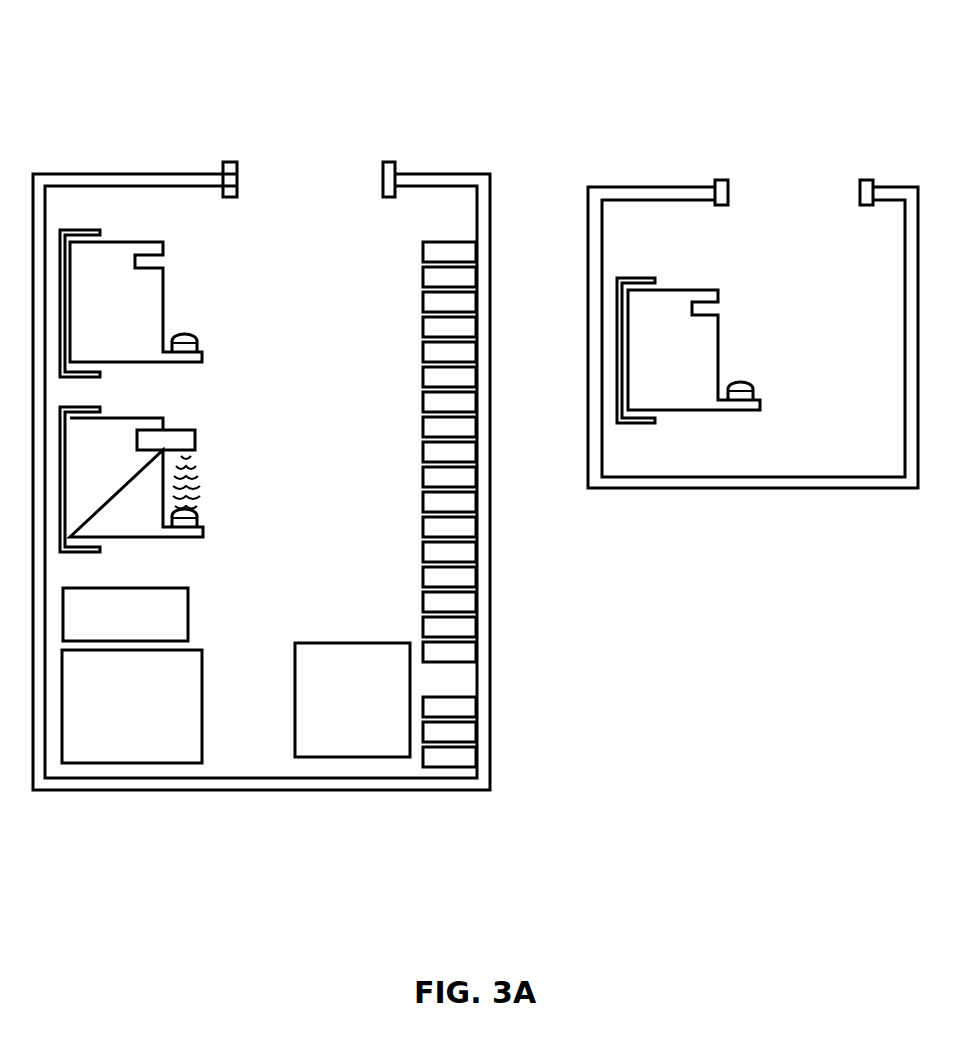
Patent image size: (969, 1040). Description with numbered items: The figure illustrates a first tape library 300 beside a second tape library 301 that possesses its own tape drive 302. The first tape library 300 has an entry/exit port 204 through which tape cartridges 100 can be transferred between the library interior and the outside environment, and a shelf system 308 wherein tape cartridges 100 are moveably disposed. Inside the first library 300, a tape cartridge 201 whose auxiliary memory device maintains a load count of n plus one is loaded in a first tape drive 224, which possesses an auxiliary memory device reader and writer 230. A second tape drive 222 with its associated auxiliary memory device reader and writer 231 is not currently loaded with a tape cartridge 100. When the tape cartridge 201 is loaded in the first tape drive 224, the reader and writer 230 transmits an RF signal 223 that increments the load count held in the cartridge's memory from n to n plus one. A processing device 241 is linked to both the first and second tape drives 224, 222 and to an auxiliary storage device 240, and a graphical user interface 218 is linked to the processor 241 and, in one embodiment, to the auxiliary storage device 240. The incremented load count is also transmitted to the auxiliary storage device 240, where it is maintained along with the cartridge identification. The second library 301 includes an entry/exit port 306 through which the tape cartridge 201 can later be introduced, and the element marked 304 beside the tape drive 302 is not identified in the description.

The first tape library 300 is at (203, 80).
The entry/exit port 204 is at (321, 161).
The second tape drive 222 is at (120, 242).
The auxiliary memory device reader and writer 231 is at (198, 345).
The first tape drive 224 is at (115, 417).
The tape cartridge 201 is at (180, 430).
The RF signal 223 is at (220, 494).
The auxiliary memory device reader and writer 230 is at (202, 520).
The processing device 241 is at (188, 620).
The auxiliary storage device 240 is at (202, 700).
The shelf system 308 is at (403, 404).
The tape cartridge 100 is at (425, 532).
The graphical user interface 218 is at (393, 643).
The second tape library 301 is at (716, 103).
The entry/exit port 306 is at (793, 183).
The tape drive 302 is at (677, 290).
The tape cartridge in second library tape drive 304 is at (755, 393).